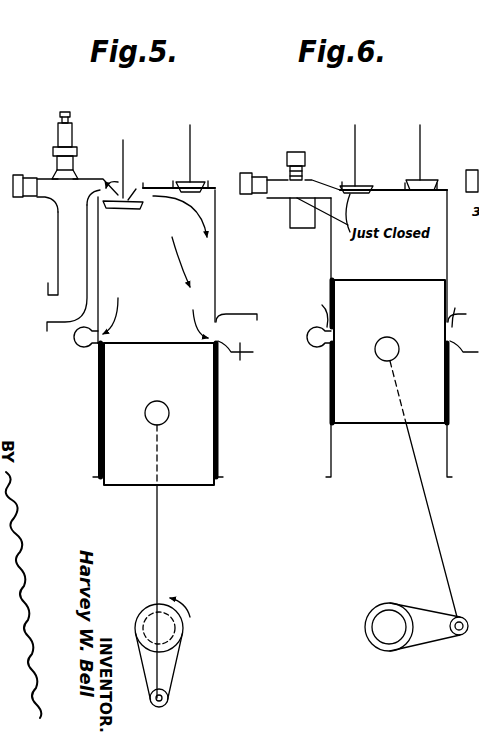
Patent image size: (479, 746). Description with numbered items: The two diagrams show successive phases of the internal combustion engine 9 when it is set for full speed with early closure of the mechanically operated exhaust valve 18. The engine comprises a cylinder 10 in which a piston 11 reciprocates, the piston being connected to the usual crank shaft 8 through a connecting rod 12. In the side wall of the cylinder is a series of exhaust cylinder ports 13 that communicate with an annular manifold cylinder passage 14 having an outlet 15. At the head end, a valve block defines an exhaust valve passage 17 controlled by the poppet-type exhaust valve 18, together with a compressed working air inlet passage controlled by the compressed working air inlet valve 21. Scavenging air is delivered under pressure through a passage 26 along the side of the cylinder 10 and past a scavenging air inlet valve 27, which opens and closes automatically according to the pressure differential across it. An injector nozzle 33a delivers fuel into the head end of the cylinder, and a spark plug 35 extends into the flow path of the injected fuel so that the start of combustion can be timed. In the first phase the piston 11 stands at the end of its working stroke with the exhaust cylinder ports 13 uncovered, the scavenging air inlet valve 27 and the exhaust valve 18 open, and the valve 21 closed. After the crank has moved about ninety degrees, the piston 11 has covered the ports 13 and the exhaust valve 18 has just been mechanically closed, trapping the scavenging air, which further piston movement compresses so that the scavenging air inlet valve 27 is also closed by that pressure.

In FIG. 5, the crank shaft 8 is at (183, 628).
In FIG. 6, the crank shaft 8 is at (391, 652).
In FIG. 5, the internal combustion engine 9 is at (76, 369).
In FIG. 6, the internal combustion engine 9 is at (321, 397).
In FIG. 5, the cylinder 10 is at (98, 421).
In FIG. 6, the cylinder 10 is at (329, 438).
In FIG. 5, the piston 11 is at (132, 481).
In FIG. 6, the piston 11 is at (368, 423).
In FIG. 5, the connecting rod 12 is at (160, 543).
In FIG. 6, the connecting rod 12 is at (432, 534).
In FIG. 5, the exhaust cylinder ports 13 is at (94, 345).
In FIG. 6, the exhaust cylinder ports 13 is at (385, 308).
In FIG. 5, the annular manifold cylinder passage 14 is at (72, 340).
In FIG. 6, the annular manifold cylinder passage 14 is at (307, 349).
In FIG. 5, the outlet 15 is at (241, 354).
In FIG. 6, the outlet 15 is at (462, 356).
In FIG. 5, the exhaust valve passage 17 is at (130, 182).
In FIG. 5, the exhaust valve 18 is at (132, 211).
In FIG. 6, the exhaust valve 18 is at (362, 194).
In FIG. 5, the compressed working air inlet valve 21 is at (192, 180).
In FIG. 6, the compressed working air inlet valve 21 is at (429, 192).
In FIG. 5, the scavenging air passage 26 is at (62, 263).
In FIG. 6, the scavenging air passage 26 is at (300, 230).
In FIG. 5, the scavenging air inlet valve 27 is at (62, 202).
In FIG. 6, the scavenging air inlet valve 27 is at (289, 204).
In FIG. 5, the injector nozzle 33a is at (28, 181).
In FIG. 6, the injector nozzle 33a is at (262, 181).
In FIG. 5, the spark plug 35 is at (78, 164).
In FIG. 6, the spark plug 35 is at (308, 160).